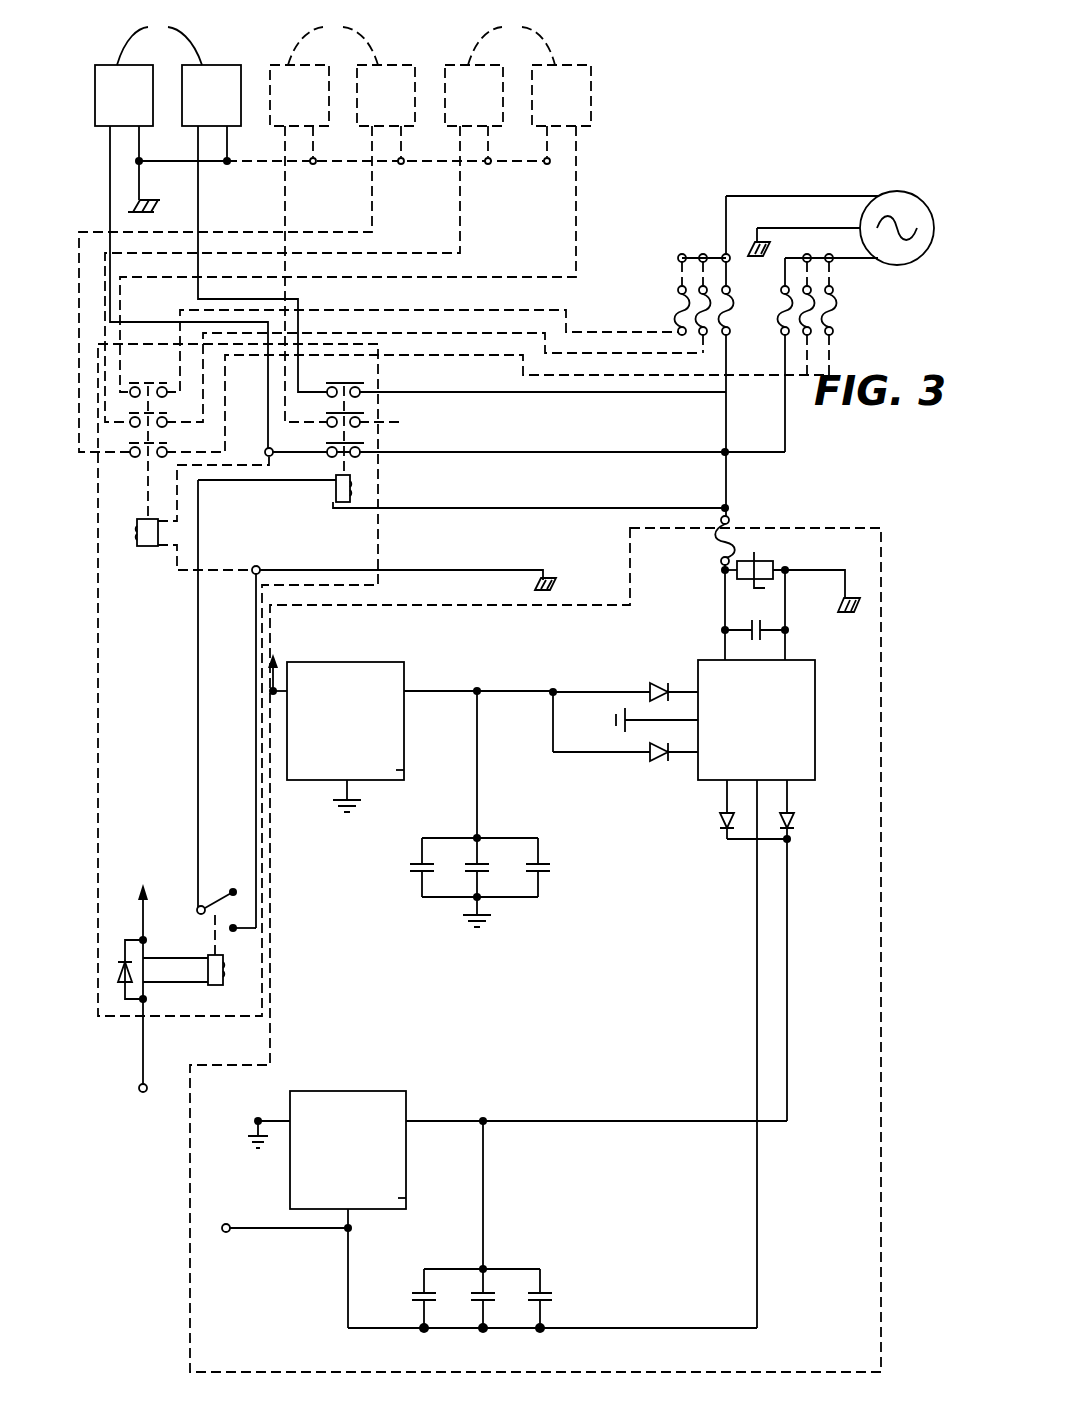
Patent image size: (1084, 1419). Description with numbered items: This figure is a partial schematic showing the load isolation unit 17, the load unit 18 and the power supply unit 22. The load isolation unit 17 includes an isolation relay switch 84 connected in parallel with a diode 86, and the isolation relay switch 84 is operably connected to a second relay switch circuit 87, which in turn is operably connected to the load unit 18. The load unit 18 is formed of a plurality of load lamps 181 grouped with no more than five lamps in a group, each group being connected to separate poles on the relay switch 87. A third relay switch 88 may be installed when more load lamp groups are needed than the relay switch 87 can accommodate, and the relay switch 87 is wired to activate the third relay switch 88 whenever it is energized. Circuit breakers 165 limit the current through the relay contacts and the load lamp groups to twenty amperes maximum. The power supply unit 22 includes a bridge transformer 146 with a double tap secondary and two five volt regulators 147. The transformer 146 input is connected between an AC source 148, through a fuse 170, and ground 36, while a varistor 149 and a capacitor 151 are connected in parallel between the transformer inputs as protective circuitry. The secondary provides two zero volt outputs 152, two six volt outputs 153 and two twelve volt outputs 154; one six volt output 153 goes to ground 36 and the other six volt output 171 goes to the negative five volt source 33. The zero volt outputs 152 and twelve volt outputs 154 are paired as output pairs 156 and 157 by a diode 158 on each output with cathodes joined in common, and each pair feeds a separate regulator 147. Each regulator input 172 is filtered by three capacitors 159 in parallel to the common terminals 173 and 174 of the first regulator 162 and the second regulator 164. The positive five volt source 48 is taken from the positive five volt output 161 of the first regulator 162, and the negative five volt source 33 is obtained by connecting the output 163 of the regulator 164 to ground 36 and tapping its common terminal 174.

The load isolation unit 17 is at (168, 1016).
The load unit 18 is at (110, 204).
The power supply unit 22 is at (884, 948).
The -5 volt source 33 is at (270, 1229).
The ground 36 is at (148, 206).
The +5 volt source 48 is at (278, 668).
The isolation relay switch 84 is at (224, 975).
The diode 86 is at (133, 969).
The second relay switch circuit 87 is at (336, 497).
The third relay switch 88 is at (138, 522).
The bridge transformer 146 is at (815, 692).
The 5 volt regulator 147 is at (375, 672).
The AC source 148 is at (912, 198).
The varistor 149 is at (771, 567).
The capacitor 151 is at (753, 626).
The 0 volt output 152 is at (700, 692).
The 6 volt output 153 is at (701, 722).
The 12 volt output 154 is at (697, 756).
The output pair 156 is at (553, 690).
The output pair 157 is at (790, 840).
The diode 158 is at (662, 684).
The capacitor 159 is at (425, 864).
The +5 volt output 161 is at (287, 697).
The first regulator 162 is at (396, 770).
The regulator output 163 is at (290, 1120).
The second regulator 164 is at (398, 1198).
The circuit breaker 165 is at (724, 300).
The fuse 170 is at (719, 553).
The 6 volt output 171 is at (760, 776).
The regulator input 172 is at (408, 691).
The common terminal 173 is at (352, 786).
The common terminal 174 is at (350, 1213).
The load lamp 181 is at (343, 71).